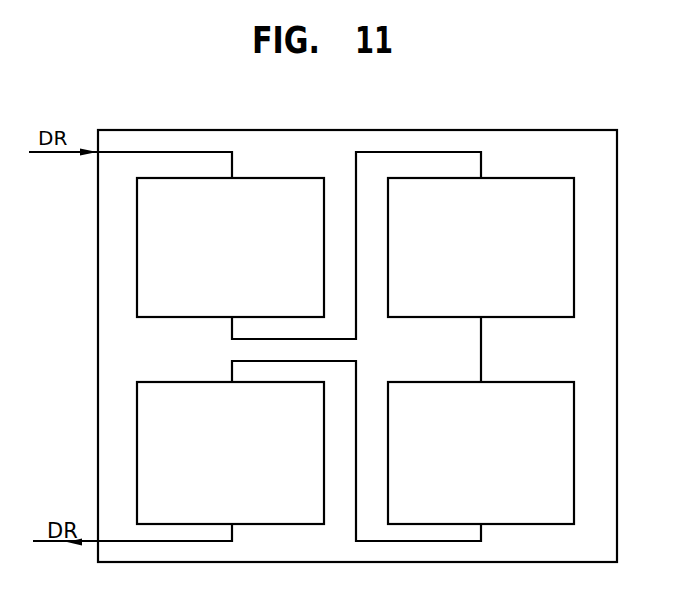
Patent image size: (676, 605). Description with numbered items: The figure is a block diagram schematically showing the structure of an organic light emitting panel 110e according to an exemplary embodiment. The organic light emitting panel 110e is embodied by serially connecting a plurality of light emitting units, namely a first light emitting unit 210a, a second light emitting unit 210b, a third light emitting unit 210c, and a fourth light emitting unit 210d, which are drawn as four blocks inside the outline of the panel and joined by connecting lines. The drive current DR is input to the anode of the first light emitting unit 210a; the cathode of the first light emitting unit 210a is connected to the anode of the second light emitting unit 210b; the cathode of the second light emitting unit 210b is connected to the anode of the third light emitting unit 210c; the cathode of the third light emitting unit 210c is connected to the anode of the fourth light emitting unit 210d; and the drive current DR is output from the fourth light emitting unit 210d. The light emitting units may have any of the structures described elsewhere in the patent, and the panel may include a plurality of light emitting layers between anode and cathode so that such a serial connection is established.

The organic light emitting panel 110e is at (503, 129).
The first light emitting unit 210a is at (257, 177).
The second light emitting unit 210b is at (518, 177).
The third light emitting unit 210c is at (519, 380).
The fourth light emitting unit 210d is at (210, 382).